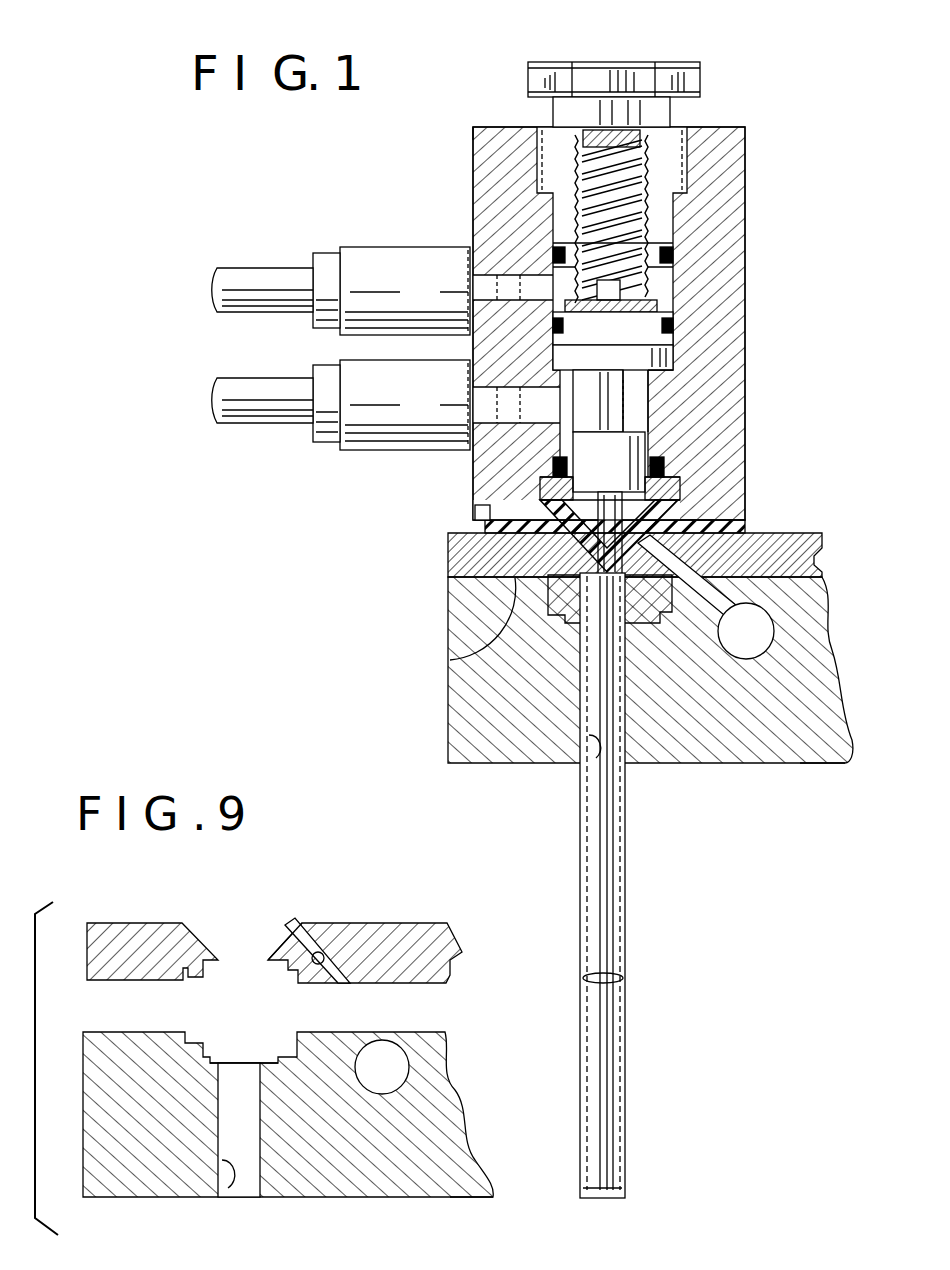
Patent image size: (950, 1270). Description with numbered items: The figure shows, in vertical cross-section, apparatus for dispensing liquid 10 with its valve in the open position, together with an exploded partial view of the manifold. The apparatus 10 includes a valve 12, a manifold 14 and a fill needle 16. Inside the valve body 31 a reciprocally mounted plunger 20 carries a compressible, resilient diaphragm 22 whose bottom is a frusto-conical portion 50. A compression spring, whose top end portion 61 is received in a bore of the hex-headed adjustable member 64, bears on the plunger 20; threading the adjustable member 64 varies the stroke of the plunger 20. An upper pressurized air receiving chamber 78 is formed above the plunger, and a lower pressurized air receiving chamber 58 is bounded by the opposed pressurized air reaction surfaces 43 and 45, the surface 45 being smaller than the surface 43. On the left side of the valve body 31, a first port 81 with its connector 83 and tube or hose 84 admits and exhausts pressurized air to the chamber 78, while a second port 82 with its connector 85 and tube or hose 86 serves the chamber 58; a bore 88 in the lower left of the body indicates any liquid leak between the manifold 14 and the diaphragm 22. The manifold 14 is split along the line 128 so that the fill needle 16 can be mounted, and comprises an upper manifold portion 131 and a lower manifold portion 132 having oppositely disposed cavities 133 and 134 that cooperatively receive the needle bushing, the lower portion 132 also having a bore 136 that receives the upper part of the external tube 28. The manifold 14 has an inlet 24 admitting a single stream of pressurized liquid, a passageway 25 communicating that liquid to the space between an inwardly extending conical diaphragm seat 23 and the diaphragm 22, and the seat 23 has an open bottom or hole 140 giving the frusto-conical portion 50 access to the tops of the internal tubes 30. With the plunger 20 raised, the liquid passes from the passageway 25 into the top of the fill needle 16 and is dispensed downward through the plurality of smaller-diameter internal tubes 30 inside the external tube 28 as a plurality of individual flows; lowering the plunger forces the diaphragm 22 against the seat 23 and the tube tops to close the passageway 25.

In FIG. 1, the apparatus for dispensing liquid 10 is at (818, 195).
In FIG. 1, the valve 12 is at (748, 165).
In FIG. 1, the manifold 14 is at (658, 632).
In FIG. 9, the manifold 14 is at (285, 1077).
In FIG. 1, the fill needle 16 is at (625, 885).
In FIG. 1, the plunger 20 is at (643, 397).
In FIG. 1, the diaphragm 22 is at (540, 528).
In FIG. 1, the diaphragm seat 23 is at (665, 505).
In FIG. 9, the diaphragm seat 23 is at (290, 950).
In FIG. 1, the inlet 24 is at (762, 622).
In FIG. 9, the inlet 24 is at (392, 1060).
In FIG. 1, the passageway 25 is at (700, 556).
In FIG. 9, the passageway 25 is at (332, 972).
In FIG. 1, the external tube 28 is at (625, 958).
In FIG. 1, the internal tubes 30 is at (625, 980).
In FIG. 1, the valve body 31 is at (474, 126).
In FIG. 1, the pressurized air reaction surface 43 is at (660, 362).
In FIG. 1, the pressurized air reaction surface 45 is at (650, 440).
In FIG. 1, the frusto-conical portion 50 is at (560, 580).
In FIG. 1, the pressurized air receiving chamber 58 is at (638, 420).
In FIG. 1, the top end portion of compression spring 61 is at (628, 172).
In FIG. 1, the adjustable member 64 is at (703, 62).
In FIG. 1, the pressurized air receiving chamber 78 is at (667, 292).
In FIG. 1, the first port 81 is at (470, 290).
In FIG. 1, the second port 82 is at (455, 432).
In FIG. 1, the connector 83 is at (360, 250).
In FIG. 1, the tube or hose 84 is at (242, 275).
In FIG. 1, the connector 85 is at (372, 445).
In FIG. 1, the tube or hose 86 is at (265, 420).
In FIG. 1, the bore 88 is at (480, 512).
In FIG. 1, the split line 128 is at (510, 610).
In FIG. 1, the upper manifold portion 131 is at (798, 550).
In FIG. 9, the upper manifold portion 131 is at (425, 948).
In FIG. 1, the lower manifold portion 132 is at (835, 748).
In FIG. 9, the lower manifold portion 132 is at (455, 1192).
In FIG. 9, the cavity 133 is at (205, 965).
In FIG. 9, the cavity 134 is at (200, 1038).
In FIG. 1, the bore 136 is at (592, 755).
In FIG. 9, the bore 136 is at (226, 1190).
In FIG. 9, the hole 140 is at (240, 948).